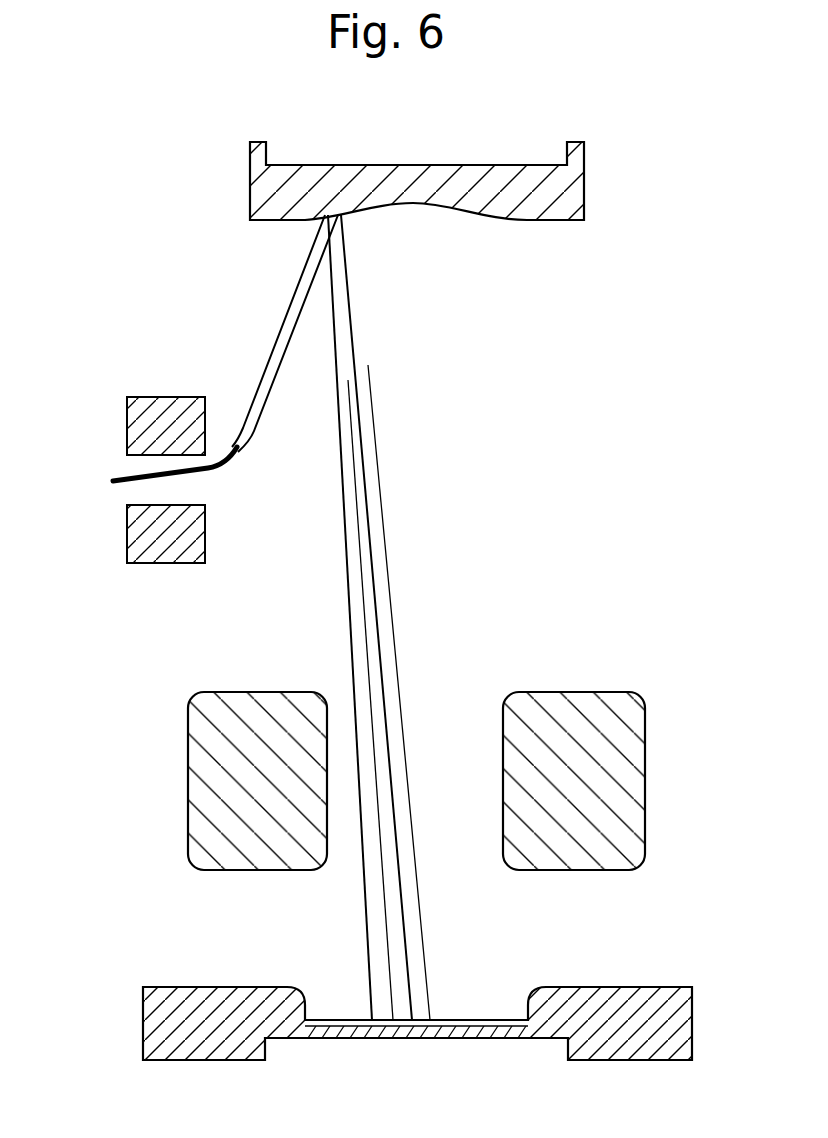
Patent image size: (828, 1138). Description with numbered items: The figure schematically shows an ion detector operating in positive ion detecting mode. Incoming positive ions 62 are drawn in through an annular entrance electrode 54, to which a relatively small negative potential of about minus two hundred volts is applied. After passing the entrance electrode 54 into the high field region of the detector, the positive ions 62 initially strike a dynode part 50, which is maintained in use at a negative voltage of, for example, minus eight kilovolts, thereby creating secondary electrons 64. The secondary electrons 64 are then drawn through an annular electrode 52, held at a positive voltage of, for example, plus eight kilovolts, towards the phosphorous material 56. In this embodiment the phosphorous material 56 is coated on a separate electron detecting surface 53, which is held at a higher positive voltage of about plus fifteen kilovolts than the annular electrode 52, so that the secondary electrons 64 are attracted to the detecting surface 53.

The dynode part 50 is at (560, 187).
The annular electrode 52 is at (270, 707).
The electron detecting surface 53 is at (645, 1005).
The annular entrance electrode 54 is at (103, 397).
The phosphorous material 56 is at (480, 1018).
The positive ions 62 is at (280, 342).
The secondary electrons 64 is at (377, 520).